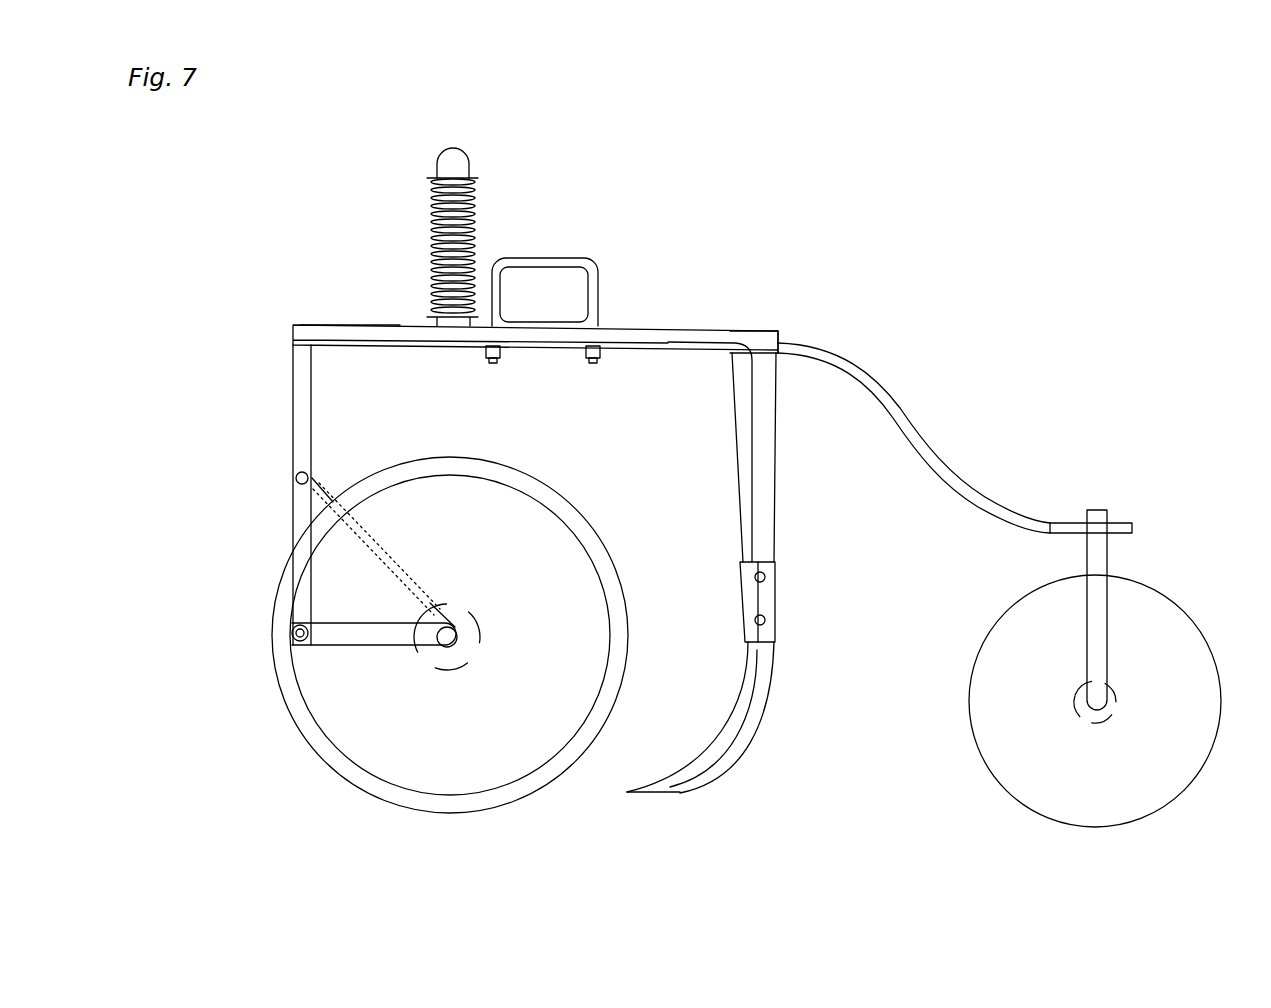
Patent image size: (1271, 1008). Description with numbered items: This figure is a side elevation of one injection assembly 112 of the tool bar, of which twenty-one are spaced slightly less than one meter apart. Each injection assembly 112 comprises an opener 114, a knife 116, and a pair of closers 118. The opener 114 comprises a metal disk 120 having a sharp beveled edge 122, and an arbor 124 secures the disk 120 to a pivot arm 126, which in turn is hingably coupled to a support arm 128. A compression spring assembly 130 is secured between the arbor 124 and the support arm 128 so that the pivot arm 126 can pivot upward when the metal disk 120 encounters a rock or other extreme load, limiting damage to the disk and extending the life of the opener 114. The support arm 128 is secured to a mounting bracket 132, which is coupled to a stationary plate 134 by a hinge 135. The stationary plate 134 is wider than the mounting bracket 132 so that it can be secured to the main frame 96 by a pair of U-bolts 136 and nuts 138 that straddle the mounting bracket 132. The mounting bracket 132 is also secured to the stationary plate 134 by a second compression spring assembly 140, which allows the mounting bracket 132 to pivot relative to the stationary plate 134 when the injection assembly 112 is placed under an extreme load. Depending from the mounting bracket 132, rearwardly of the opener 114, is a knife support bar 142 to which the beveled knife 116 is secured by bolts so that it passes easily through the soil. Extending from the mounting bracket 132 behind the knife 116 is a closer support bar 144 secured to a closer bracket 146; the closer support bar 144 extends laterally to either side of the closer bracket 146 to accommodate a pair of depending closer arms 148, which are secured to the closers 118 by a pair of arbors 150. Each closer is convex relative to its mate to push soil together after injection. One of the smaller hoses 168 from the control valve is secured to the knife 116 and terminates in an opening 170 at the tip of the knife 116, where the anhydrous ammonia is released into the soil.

The main frame 96 is at (530, 290).
The injection assembly 112 is at (1019, 295).
The opener 114 is at (441, 841).
The knife 116 is at (788, 757).
The closers 118 is at (1106, 872).
The metal disk 120 is at (365, 778).
The beveled edge 122 is at (318, 755).
The arbor 124 is at (470, 628).
The pivot arm 126 is at (330, 648).
The support arm 128 is at (293, 437).
The compression spring assembly 130 is at (395, 562).
The mounting bracket 132 is at (293, 342).
The stationary plate 134 is at (342, 323).
The hinge 135 is at (778, 333).
The U-bolts 136 is at (580, 262).
The nuts 138 is at (486, 352).
The compression spring assembly 140 is at (393, 230).
The knife support bar 142 is at (777, 387).
The closer support bar 144 is at (957, 474).
The closer bracket 146 is at (1107, 512).
The closer arms 148 is at (1107, 625).
The arbors 150 is at (1107, 708).
The smaller hoses 168 is at (668, 338).
The opening 170 is at (630, 792).